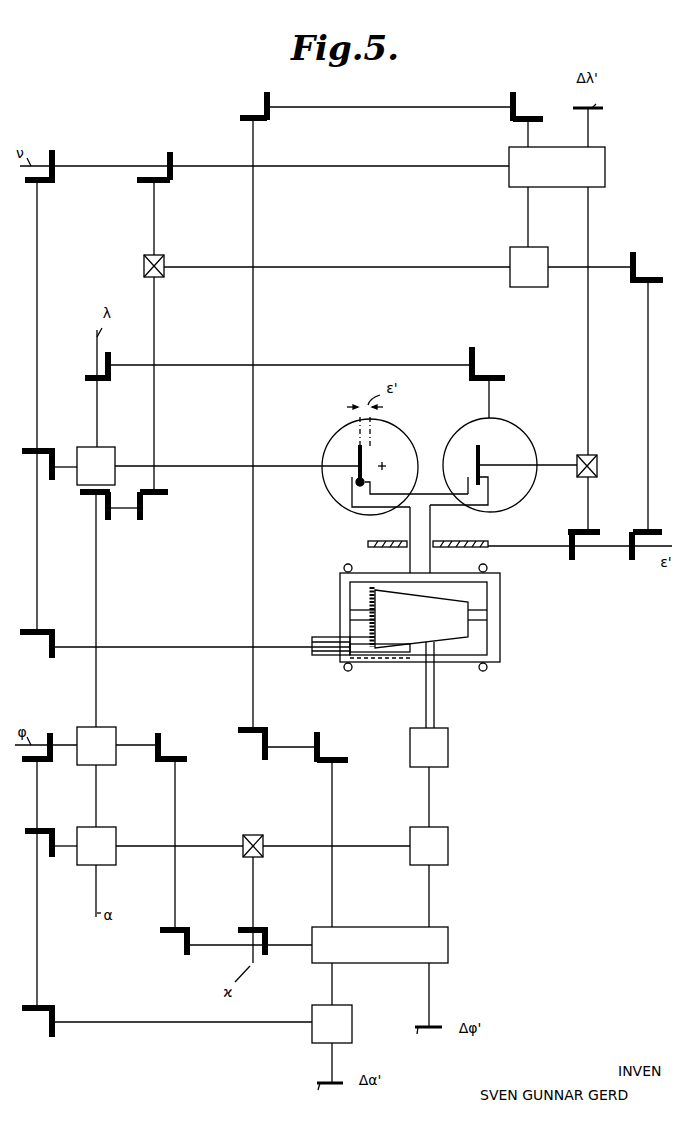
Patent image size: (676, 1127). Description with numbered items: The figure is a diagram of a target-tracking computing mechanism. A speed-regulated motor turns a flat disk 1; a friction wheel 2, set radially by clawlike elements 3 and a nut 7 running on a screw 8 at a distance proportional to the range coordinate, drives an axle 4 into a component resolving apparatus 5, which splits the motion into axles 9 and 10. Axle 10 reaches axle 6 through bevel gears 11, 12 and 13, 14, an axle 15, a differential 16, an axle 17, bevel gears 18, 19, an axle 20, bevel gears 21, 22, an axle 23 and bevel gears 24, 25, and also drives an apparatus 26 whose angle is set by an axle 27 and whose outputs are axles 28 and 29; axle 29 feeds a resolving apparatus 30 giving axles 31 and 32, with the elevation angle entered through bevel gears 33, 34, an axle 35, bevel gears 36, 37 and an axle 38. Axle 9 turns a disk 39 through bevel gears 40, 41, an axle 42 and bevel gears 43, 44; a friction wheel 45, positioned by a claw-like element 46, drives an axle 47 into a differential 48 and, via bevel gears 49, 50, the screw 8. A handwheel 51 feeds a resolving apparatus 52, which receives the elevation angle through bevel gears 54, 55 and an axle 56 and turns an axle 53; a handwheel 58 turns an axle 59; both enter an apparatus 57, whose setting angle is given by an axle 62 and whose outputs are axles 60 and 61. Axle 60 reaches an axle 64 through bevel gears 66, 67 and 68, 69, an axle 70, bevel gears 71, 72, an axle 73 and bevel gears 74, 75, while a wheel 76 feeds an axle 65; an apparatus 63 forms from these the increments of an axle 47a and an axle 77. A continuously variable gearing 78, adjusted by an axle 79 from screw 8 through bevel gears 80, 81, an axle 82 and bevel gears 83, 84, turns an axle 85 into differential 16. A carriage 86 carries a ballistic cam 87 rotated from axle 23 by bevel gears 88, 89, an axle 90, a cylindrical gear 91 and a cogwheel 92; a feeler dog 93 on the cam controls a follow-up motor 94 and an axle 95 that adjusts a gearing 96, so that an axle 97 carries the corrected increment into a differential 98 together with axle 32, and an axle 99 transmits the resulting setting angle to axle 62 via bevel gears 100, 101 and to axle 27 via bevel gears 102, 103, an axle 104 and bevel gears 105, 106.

The flat disk 1 is at (408, 450).
The friction wheel 2 is at (357, 451).
The clawlike elements 3 is at (352, 503).
The axle 4 is at (218, 466).
The component resolving apparatus 5 is at (96, 466).
The axle 6 is at (64, 458).
The nut 7 is at (411, 526).
The screw 8 is at (468, 541).
The axle 9 is at (98, 413).
The axle 10 is at (97, 585).
The bevel gear 11 is at (90, 502).
The bevel gear 12 is at (113, 515).
The bevel gear 13 is at (143, 515).
The bevel gear 14 is at (172, 498).
The axle 15 is at (155, 331).
The differential 16 is at (142, 266).
The axle 17 is at (155, 229).
The bevel gear 18 is at (158, 190).
The bevel gear 19 is at (181, 161).
The axle 20 is at (124, 166).
The bevel gear 21 is at (52, 156).
The bevel gear 22 is at (34, 189).
The axle 23 is at (38, 305).
The bevel gear 24 is at (34, 440).
The bevel gear 25 is at (52, 476).
The apparatus 26 is at (96, 746).
The axle 27 is at (151, 745).
The axle 28 is at (46, 737).
The axle 29 is at (97, 798).
The resolving apparatus 30 is at (96, 846).
The axle 31 is at (97, 896).
The axle 32 is at (139, 846).
The bevel gear wheel 33 is at (50, 738).
The bevel gear wheel 34 is at (31, 769).
The axle 35 is at (38, 796).
The bevel gear 36 is at (34, 819).
The bevel gear 37 is at (52, 854).
The axle 38 is at (64, 838).
The disk 39 is at (520, 440).
The bevel gear 40 is at (85, 377).
The bevel gear 41 is at (120, 362).
The axle 42 is at (326, 365).
The bevel gear 43 is at (474, 354).
The bevel gear 44 is at (505, 382).
The friction wheel 45 is at (476, 455).
The claw-like element 46 is at (492, 503).
The axle 47 is at (566, 465).
The axle 47a is at (589, 365).
The differential 48 is at (598, 470).
The bevel gear 49 is at (582, 522).
The bevel gear 50 is at (576, 556).
The handwheel 51 is at (331, 1075).
The resolving apparatus 52 is at (332, 1024).
The axle 53 is at (332, 998).
The bevel gear 54 is at (34, 997).
The bevel gear 55 is at (52, 1034).
The axle 56 is at (191, 1022).
The apparatus 57 is at (380, 945).
The handwheel 58 is at (430, 1038).
The axle 59 is at (429, 1006).
The axle 60 is at (333, 891).
The axle 61 is at (429, 912).
The axle 62 is at (223, 950).
The apparatus 63 is at (557, 167).
The axle 64 is at (540, 133).
The axle 65 is at (599, 127).
The bevel gear 66 is at (339, 771).
The bevel gear 67 is at (318, 736).
The bevel gear 68 is at (268, 756).
The bevel gear 69 is at (247, 719).
The axle 70 is at (254, 543).
The bevel gear 71 is at (247, 107).
The bevel gear 72 is at (279, 101).
The axle 73 is at (404, 107).
The bevel gear 74 is at (522, 98).
The bevel gear 75 is at (528, 109).
The wheel 76 is at (598, 103).
The axle 77 is at (529, 218).
The continuously variable gearing 78 is at (529, 267).
The axle 79 is at (581, 267).
The bevel gear 80 is at (634, 556).
The bevel gear 81 is at (651, 523).
The axle 82 is at (649, 410).
The bevel gear 83 is at (651, 290).
The bevel gear 84 is at (644, 261).
The axle 85 is at (360, 267).
The carriage 86 is at (500, 645).
The ballistic cam 87 is at (421, 619).
The bevel gear 88 is at (34, 622).
The bevel gear 89 is at (52, 655).
The axle 90 is at (201, 647).
The cylindrical gear 91 is at (317, 658).
The cogwheel 92 is at (368, 597).
The feeler dog 93 is at (435, 698).
The follow-up motor 94 is at (429, 747).
The axle 95 is at (430, 810).
The gearing 96 is at (429, 846).
The axle 97 is at (306, 846).
The differential 98 is at (253, 835).
The axle 99 is at (254, 888).
The bevel gear 100 is at (248, 927).
The bevel gear 101 is at (270, 955).
The bevel gear 102 is at (178, 954).
The bevel gear 103 is at (160, 931).
The axle 104 is at (176, 883).
The bevel gear 105 is at (187, 762).
The bevel gear 106 is at (159, 739).